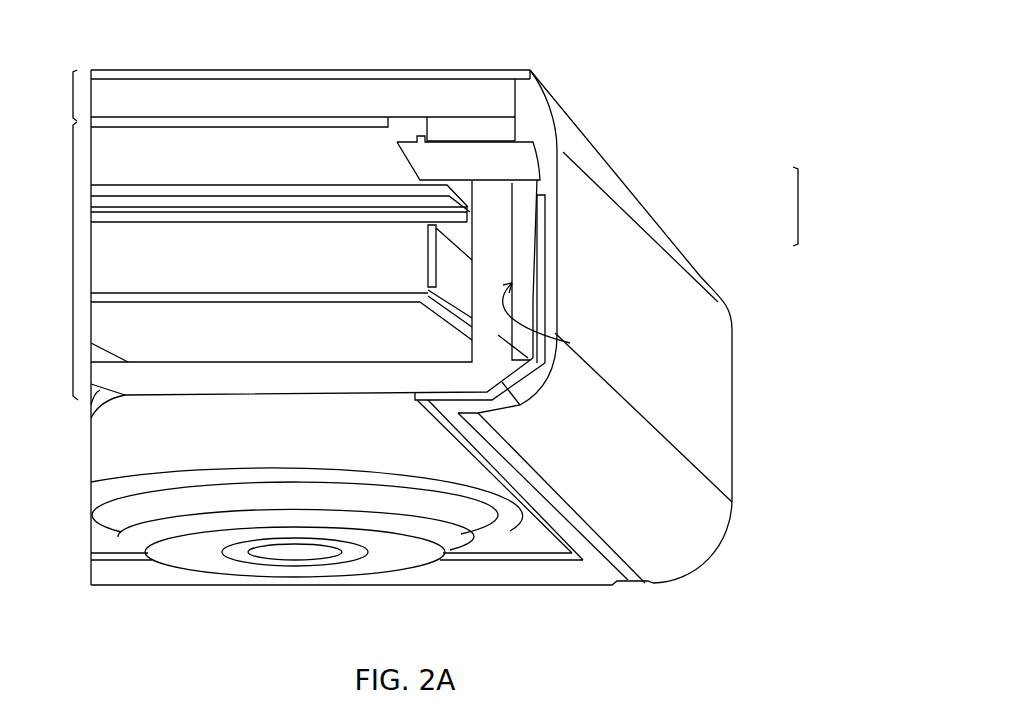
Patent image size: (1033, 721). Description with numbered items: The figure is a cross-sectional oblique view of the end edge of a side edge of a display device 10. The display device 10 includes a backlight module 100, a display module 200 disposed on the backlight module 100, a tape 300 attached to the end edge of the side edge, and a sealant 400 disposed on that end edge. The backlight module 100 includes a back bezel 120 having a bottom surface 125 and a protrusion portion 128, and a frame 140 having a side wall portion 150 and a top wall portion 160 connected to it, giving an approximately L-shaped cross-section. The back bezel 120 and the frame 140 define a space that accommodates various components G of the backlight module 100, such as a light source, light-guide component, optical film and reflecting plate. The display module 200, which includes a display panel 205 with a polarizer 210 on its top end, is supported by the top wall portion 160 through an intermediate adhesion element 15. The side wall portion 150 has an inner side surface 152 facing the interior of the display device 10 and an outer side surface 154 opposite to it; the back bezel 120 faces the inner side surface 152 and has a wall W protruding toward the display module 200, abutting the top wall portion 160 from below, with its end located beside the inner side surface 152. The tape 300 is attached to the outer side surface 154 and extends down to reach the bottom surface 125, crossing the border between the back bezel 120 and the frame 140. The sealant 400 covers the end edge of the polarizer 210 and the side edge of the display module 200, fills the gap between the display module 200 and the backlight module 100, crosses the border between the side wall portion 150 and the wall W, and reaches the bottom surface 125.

The display device 10 is at (31, 31).
The intermediate adhesion element 15 is at (498, 129).
The backlight module 100 is at (248, 270).
The back bezel 120 is at (533, 373).
The bottom surface 125 is at (268, 443).
The protrusion portion 128 is at (200, 555).
The frame 140 is at (818, 206).
The side wall portion 150 is at (527, 225).
The inner side surface 152 is at (555, 335).
The outer side surface 154 is at (537, 270).
The top wall portion 160 is at (522, 159).
The display module 200 is at (50, 95).
The display panel 205 is at (242, 111).
The polarizer 210 is at (493, 72).
The tape 300 is at (535, 380).
The sealant 400 is at (545, 363).
The components G is at (226, 306).
The wall W is at (483, 245).